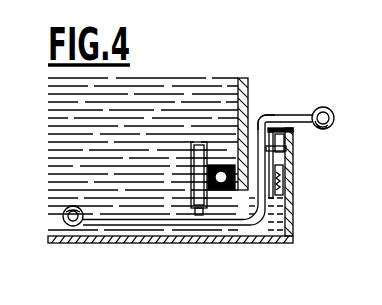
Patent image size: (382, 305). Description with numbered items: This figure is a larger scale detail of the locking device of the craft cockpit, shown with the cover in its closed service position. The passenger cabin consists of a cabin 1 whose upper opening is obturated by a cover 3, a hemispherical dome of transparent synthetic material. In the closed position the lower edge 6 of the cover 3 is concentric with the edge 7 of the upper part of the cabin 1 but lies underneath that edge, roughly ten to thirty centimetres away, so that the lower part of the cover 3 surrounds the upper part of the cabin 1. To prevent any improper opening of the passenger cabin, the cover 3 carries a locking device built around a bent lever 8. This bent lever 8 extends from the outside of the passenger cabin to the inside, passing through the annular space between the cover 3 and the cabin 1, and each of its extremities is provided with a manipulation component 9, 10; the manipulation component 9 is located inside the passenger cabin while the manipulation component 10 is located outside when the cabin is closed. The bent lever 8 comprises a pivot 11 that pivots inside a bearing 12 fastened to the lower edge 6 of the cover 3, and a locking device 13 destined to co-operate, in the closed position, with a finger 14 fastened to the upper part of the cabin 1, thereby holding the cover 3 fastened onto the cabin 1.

The cabin 1 is at (137, 244).
The cover 3 is at (241, 75).
The lower edge 6 is at (248, 94).
The edge 7 is at (294, 186).
The bent lever 8 is at (252, 243).
The manipulation component 9 is at (326, 110).
The manipulation component 10 is at (62, 214).
The pivot 11 is at (196, 216).
The bearing 12 is at (201, 141).
The locking device 13 is at (269, 112).
The finger 14 is at (284, 152).